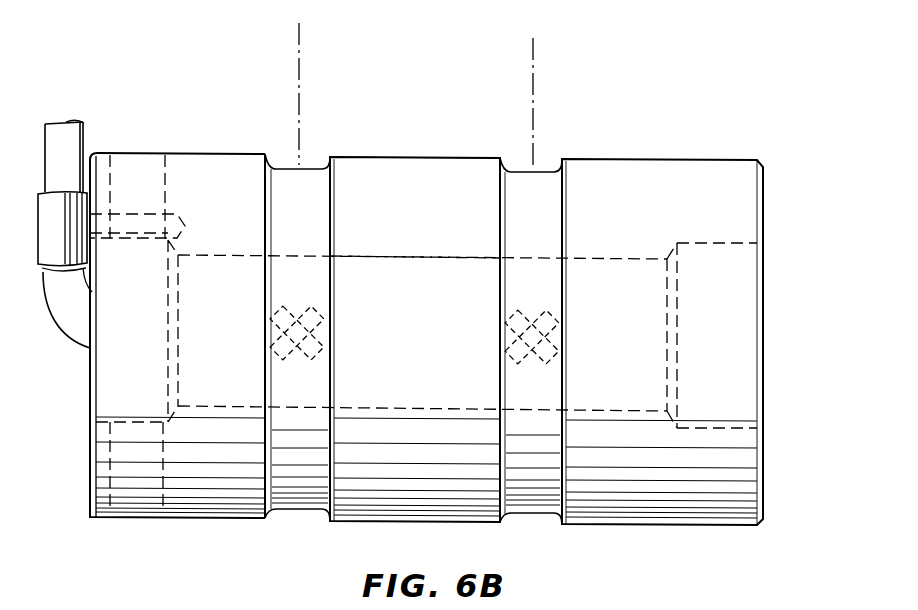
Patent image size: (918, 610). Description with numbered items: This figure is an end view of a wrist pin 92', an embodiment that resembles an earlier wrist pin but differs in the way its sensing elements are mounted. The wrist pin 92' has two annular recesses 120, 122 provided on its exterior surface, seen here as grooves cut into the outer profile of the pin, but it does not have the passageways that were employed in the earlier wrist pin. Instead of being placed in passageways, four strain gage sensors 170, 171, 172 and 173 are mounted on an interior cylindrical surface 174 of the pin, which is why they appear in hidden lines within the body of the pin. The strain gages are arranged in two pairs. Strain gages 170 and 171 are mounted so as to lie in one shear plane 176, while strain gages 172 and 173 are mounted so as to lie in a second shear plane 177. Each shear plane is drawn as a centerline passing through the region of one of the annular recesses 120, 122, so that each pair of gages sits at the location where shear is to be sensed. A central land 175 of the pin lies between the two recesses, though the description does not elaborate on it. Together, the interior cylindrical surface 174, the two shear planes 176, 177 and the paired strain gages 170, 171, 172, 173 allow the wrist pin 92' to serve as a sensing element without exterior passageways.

The wrist pin 92' is at (400, 309).
The annular recess 120 is at (280, 168).
The annular recess 122 is at (548, 172).
The strain gage sensor 170 is at (274, 345).
The strain gage sensor 171 is at (318, 342).
The strain gage sensor 172 is at (507, 352).
The strain gage sensor 173 is at (550, 342).
The interior cylindrical surface 174 is at (380, 255).
The central land 175 is at (432, 156).
The shear plane 176 is at (300, 95).
The shear plane 177 is at (535, 97).